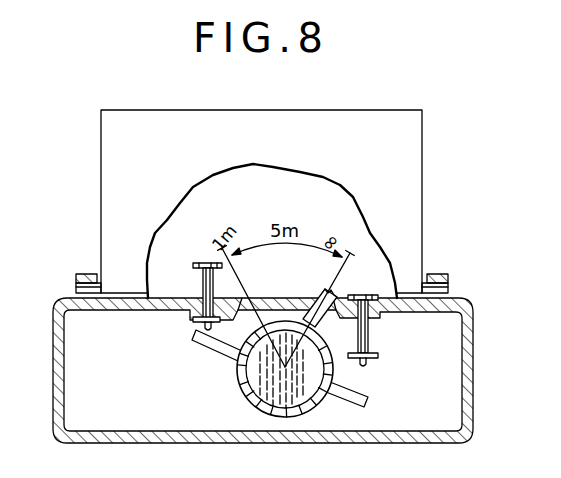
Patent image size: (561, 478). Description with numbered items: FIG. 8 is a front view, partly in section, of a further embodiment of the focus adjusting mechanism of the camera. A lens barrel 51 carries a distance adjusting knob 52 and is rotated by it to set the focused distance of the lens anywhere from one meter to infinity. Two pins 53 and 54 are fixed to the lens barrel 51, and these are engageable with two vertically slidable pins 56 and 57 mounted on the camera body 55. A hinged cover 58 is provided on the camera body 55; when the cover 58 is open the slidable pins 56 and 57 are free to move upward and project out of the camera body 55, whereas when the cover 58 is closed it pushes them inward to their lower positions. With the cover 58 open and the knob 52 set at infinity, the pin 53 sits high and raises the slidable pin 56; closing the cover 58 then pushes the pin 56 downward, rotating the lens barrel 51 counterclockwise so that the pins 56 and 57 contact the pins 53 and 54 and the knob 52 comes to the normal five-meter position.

The lens barrel 51 is at (244, 396).
The distance adjusting knob 52 is at (319, 296).
The pin 53 is at (202, 342).
The pin 54 is at (358, 392).
The camera body 55 is at (147, 304).
The vertically slidable pin 56 is at (203, 284).
The vertically slidable pin 57 is at (369, 329).
The hinged cover 58 is at (413, 131).